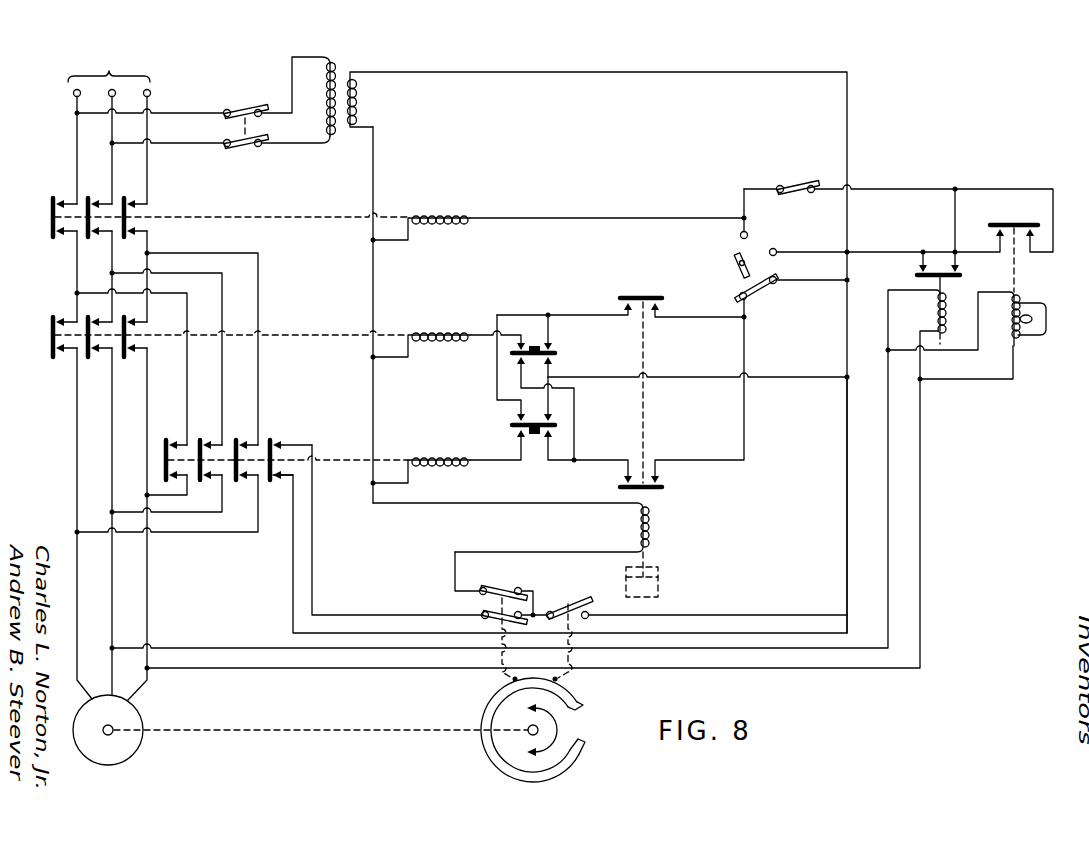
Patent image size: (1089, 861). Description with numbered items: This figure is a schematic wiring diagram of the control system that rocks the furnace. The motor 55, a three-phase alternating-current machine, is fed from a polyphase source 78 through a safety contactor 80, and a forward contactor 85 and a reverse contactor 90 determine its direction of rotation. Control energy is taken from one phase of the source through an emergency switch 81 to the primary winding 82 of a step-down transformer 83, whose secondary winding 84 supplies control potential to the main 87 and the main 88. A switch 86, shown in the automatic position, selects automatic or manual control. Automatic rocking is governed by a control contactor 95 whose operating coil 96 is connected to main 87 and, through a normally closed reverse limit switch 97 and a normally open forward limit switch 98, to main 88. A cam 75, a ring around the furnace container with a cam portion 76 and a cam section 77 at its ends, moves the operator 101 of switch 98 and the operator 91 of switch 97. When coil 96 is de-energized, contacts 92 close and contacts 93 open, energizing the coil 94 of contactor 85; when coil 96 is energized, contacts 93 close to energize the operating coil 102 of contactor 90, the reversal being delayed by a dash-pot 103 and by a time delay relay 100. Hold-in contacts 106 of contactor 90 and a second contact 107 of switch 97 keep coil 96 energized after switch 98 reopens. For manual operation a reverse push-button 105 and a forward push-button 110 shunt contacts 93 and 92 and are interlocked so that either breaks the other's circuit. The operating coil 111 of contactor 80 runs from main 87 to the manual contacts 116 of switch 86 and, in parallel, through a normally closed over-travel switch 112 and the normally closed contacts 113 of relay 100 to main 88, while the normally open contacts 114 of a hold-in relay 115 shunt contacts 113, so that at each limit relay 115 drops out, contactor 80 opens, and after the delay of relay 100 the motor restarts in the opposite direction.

The polyphase source 78 is at (108, 72).
The safety contactor 80 is at (49, 221).
The emergency switch 81 is at (243, 111).
The primary winding 82 is at (316, 78).
The step-down transformer 83 is at (347, 168).
The secondary winding 84 is at (358, 98).
The forward contactor 85 is at (47, 337).
The automatic-manual switch 86 is at (734, 273).
The main 87 is at (376, 275).
The main 88 is at (845, 433).
The reverse contactor 90 is at (165, 441).
The operator 91 is at (500, 677).
The contacts 92 is at (640, 296).
The contacts 93 is at (663, 490).
The coil 94 is at (444, 346).
The control contactor 95 is at (650, 413).
The operating coil 96 is at (636, 528).
The reverse limit switch 97 is at (500, 587).
The forward limit switch 98 is at (580, 596).
The time delay relay 100 is at (1021, 297).
The operator 101 is at (566, 677).
The operating coil 102 is at (438, 468).
The dash-pot 103 is at (661, 586).
The reverse push-button 105 is at (558, 354).
The hold-in contacts 106 is at (285, 443).
The second contact 107 is at (488, 608).
The forward push-button 110 is at (510, 426).
The operating coil 111 is at (436, 208).
The over-travel switch 112 is at (792, 184).
The contacts 113 is at (1010, 222).
The contacts 114 is at (914, 273).
The hold-in relay 115 is at (935, 314).
The manual contacts 116 is at (740, 236).
The motor 55 is at (128, 746).
The cam 75 is at (495, 757).
The cam portion 76 is at (580, 705).
The cam section 77 is at (586, 742).